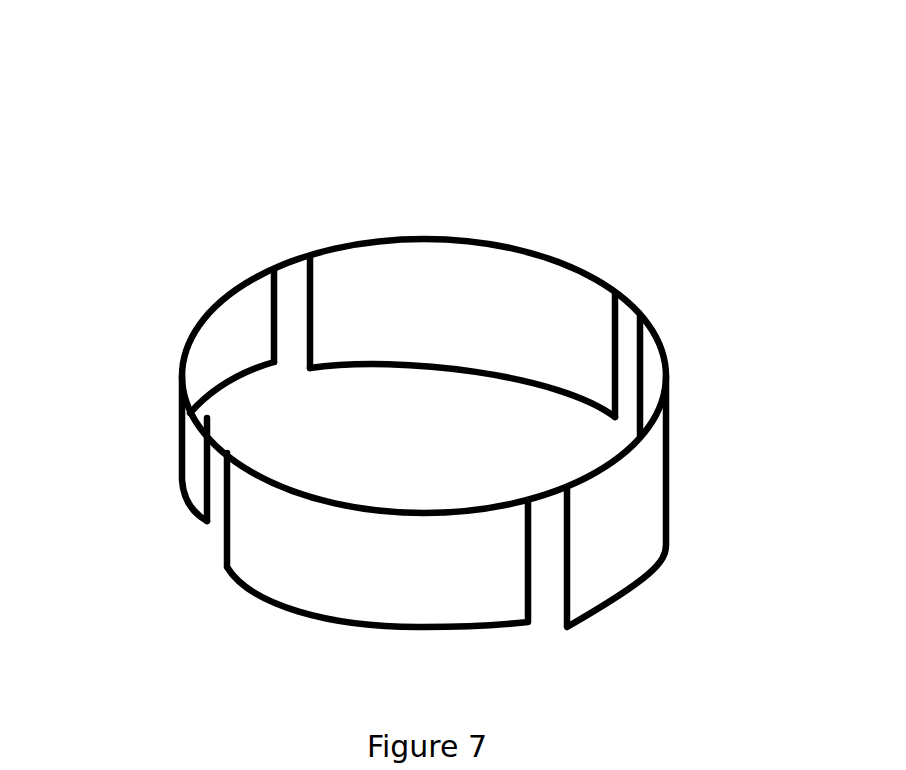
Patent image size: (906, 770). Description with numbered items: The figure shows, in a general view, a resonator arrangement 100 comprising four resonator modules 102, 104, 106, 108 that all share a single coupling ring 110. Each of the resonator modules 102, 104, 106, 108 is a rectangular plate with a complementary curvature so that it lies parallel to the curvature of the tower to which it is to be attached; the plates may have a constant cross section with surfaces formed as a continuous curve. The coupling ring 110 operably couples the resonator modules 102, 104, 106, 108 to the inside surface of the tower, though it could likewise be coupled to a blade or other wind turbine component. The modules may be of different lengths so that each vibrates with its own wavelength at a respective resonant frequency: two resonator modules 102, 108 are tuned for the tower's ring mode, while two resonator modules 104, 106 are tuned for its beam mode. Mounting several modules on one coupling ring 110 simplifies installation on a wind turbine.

The resonator arrangement 100 is at (690, 86).
The resonator module 102 is at (639, 575).
The resonator module 104 is at (242, 588).
The resonator module 106 is at (180, 457).
The resonator module 108 is at (306, 295).
The coupling ring 110 is at (637, 308).